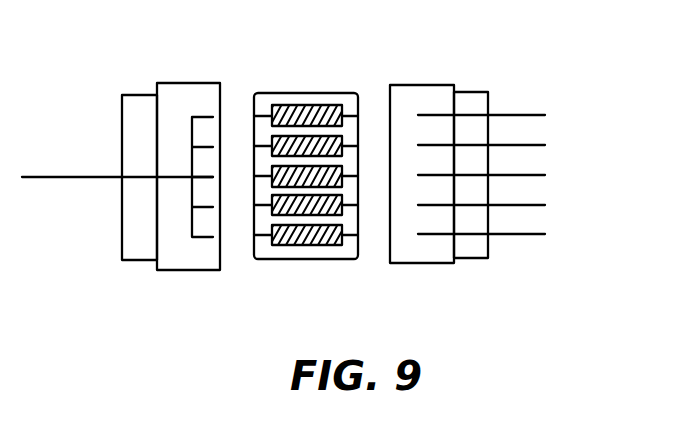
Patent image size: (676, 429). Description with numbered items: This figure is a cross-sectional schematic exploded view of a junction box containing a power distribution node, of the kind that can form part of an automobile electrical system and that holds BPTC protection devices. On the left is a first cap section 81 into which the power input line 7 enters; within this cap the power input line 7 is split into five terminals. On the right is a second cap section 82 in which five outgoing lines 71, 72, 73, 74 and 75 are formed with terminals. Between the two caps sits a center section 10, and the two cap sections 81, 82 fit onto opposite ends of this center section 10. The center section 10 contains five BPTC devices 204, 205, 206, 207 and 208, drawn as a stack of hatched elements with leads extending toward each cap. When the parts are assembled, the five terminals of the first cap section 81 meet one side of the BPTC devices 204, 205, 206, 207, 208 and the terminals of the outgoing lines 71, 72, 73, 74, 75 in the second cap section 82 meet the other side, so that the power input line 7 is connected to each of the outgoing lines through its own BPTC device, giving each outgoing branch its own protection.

The power input line 7 is at (76, 179).
The center section 10 is at (263, 92).
The first cap section 81 is at (183, 82).
The second cap section 82 is at (423, 85).
The outgoing line 71 is at (523, 112).
The outgoing line 72 is at (527, 140).
The outgoing line 73 is at (527, 172).
The outgoing line 74 is at (525, 203).
The outgoing line 75 is at (523, 237).
The BPTC device 204 is at (295, 104).
The BPTC device 205 is at (336, 130).
The BPTC device 206 is at (275, 190).
The BPTC device 207 is at (335, 220).
The BPTC device 208 is at (323, 247).